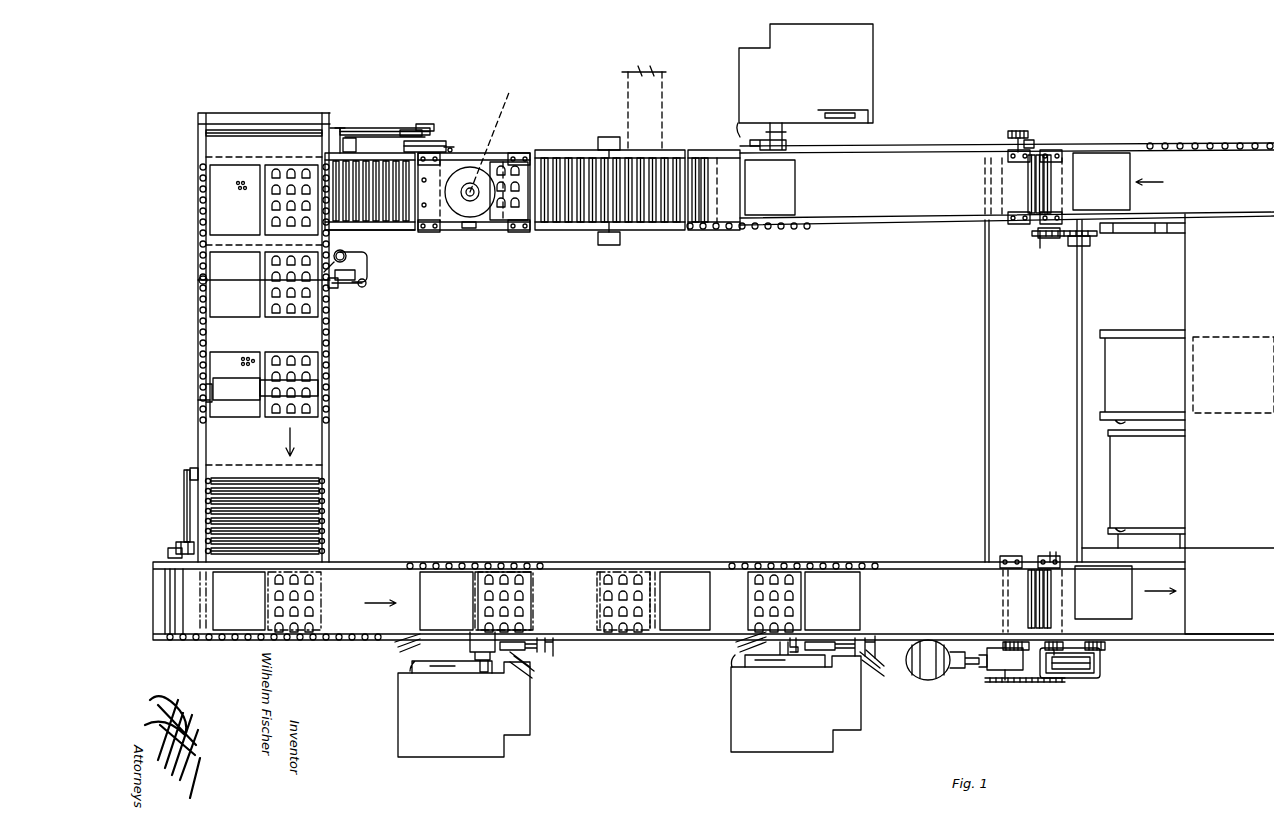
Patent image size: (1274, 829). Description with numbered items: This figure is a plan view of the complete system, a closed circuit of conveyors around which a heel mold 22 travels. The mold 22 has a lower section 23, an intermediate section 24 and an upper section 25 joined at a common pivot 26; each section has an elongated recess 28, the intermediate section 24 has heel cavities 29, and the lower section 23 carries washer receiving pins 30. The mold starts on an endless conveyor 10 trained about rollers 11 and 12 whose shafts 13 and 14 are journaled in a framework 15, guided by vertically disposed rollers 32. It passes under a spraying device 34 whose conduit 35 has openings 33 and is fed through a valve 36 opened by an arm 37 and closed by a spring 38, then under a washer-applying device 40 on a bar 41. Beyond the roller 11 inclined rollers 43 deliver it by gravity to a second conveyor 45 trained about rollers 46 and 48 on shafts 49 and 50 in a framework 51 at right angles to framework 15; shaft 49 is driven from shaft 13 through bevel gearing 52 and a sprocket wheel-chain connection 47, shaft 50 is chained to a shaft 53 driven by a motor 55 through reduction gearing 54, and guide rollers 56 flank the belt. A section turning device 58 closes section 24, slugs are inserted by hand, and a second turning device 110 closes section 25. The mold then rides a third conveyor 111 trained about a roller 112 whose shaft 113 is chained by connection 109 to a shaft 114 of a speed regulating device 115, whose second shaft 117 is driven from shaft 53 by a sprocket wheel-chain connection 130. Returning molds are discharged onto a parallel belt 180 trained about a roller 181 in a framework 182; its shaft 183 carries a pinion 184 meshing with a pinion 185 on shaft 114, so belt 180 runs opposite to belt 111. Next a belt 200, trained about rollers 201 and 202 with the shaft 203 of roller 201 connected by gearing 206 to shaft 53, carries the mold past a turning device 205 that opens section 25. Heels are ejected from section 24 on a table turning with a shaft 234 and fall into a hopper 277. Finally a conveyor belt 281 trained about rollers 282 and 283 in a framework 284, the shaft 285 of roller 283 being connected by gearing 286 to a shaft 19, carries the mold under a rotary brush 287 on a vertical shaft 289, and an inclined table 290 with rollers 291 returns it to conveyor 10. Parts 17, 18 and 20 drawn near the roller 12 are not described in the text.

The endless conveyor 10 is at (315, 444).
The roller 11 is at (332, 464).
The roller 12 is at (338, 128).
The shaft 13 is at (192, 470).
The shaft 14 is at (340, 128).
The framework 15 is at (332, 342).
The switch box 17 is at (356, 143).
The cross bar 18 is at (352, 128).
The shaft 19 is at (412, 130).
The guide bar 20 is at (385, 128).
The mold 22 is at (212, 201).
The lower section 23 is at (250, 230).
The intermediate section 24 is at (290, 228).
The upper section 25 is at (862, 585).
The common pivot 26 is at (487, 567).
The elongated recess 28 is at (244, 180).
The cavities 29 is at (648, 570).
The heel washer receiving pins 30 is at (252, 355).
The vertically disposed rollers 32 is at (202, 188).
The openings 33 is at (260, 285).
The spraying device 34 is at (338, 290).
The conduit 35 is at (365, 288).
The valve 36 is at (360, 248).
The arm 37 is at (341, 261).
The spring 38 is at (356, 273).
The washer-applying device 40 is at (213, 372).
The bar 41 is at (205, 408).
The rollers 43 is at (340, 494).
The second endless conveyor 45 is at (385, 630).
The roller 46 is at (150, 647).
The sprocket wheel-chain connection 47 is at (185, 512).
The roller 48 is at (1030, 556).
The shaft 49 is at (166, 556).
The shaft 50 is at (1045, 558).
The second framework 51 is at (617, 630).
The bevel gearing and sprocket wheel-chain connection 52 is at (176, 542).
The shaft 53 is at (990, 495).
The reduction gearing 54 is at (990, 670).
The motor 55 is at (922, 680).
The rollers 56 is at (808, 230).
The section turning device 58 is at (520, 700).
The sprocket wheel-chain connection 109 is at (1072, 678).
The second mold section turning device 110 is at (735, 708).
The third conveyor 111 is at (1163, 618).
The roller 112 is at (1060, 550).
The shaft 113 is at (1055, 550).
The shaft 114 is at (1075, 378).
The speed regulating device 115 is at (1080, 676).
The second shaft 117 is at (1058, 684).
The sprocket wheel-chain connection 130 is at (1025, 684).
The endless conveyor belt 180 is at (1170, 150).
The roller 181 is at (1058, 155).
The framework 182 is at (975, 150).
The shaft 183 is at (1036, 238).
The pinion 184 is at (1040, 248).
The pinion 185 is at (1060, 238).
The endless conveyor belt 200 is at (900, 158).
The roller 201 is at (1005, 158).
The second roller 202 is at (700, 150).
The shaft 203 is at (1034, 142).
The mold section turning device 205 is at (870, 70).
The gearing 206 is at (1022, 131).
The shaft 234 is at (608, 245).
The hopper 277 is at (658, 230).
The conveyor belt 281 is at (448, 230).
The roller 282 is at (518, 155).
The roller 283 is at (448, 146).
The framework 284 is at (472, 184).
The shaft 285 is at (440, 124).
The gearing 286 is at (425, 141).
The rotary brush 287 is at (470, 228).
The vertically disposed shaft 289 is at (507, 132).
The inclined table 290 is at (398, 230).
The rollers 291 is at (393, 232).